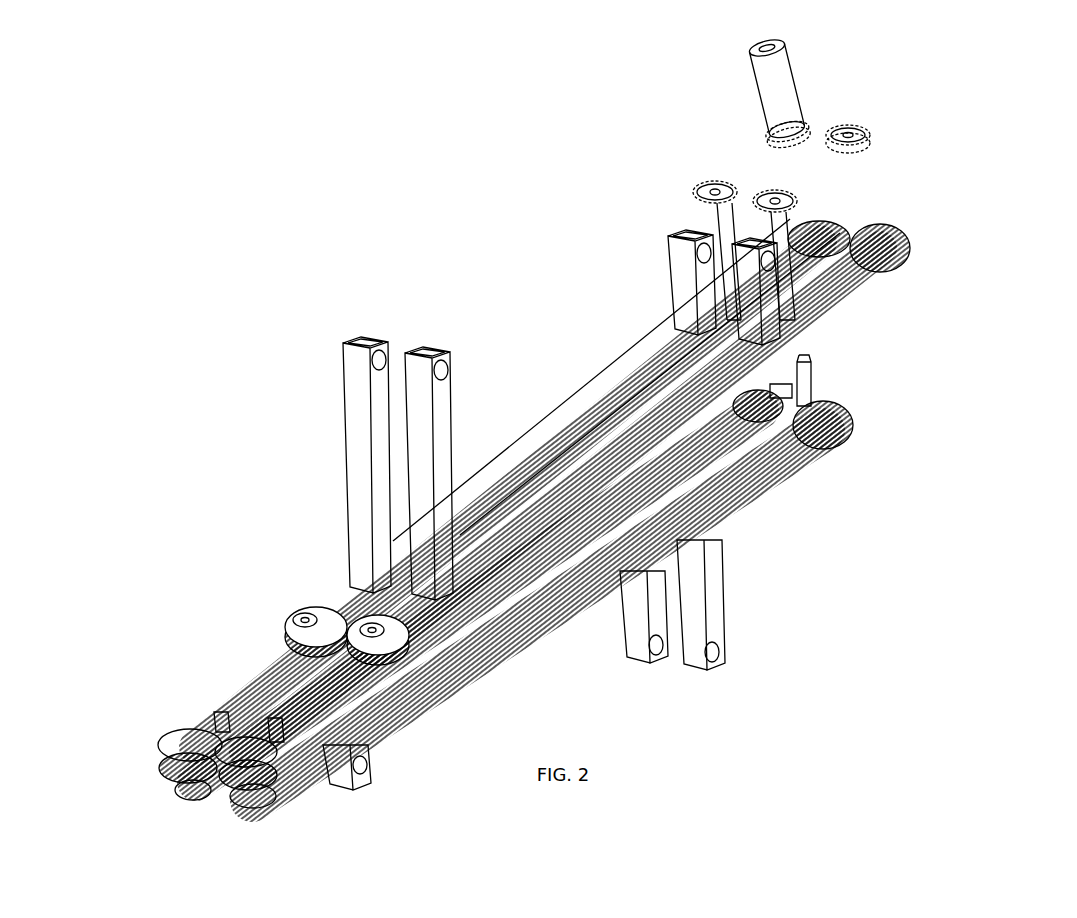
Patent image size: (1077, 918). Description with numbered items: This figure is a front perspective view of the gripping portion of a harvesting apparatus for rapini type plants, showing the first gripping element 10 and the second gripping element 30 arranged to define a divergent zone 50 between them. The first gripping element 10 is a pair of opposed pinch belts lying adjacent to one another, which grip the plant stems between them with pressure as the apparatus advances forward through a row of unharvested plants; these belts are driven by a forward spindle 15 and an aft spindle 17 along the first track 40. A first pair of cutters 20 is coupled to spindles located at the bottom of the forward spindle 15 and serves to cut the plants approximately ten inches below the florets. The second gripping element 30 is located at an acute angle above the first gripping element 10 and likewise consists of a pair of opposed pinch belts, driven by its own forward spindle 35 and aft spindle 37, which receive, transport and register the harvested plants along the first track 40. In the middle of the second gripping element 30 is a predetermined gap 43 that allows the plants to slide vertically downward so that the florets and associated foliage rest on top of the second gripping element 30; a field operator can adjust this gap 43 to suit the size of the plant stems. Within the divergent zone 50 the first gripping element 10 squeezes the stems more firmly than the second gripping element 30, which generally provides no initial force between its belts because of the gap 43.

The first gripping element 10 is at (182, 727).
The forward spindle 15 is at (248, 812).
The aft spindle 17 is at (797, 377).
The first pair of cutters 20 is at (302, 795).
The second gripping element 30 is at (542, 413).
The forward spindle 35 is at (300, 606).
The aft spindle 37 is at (712, 180).
The first track 40 is at (628, 375).
The predetermined gap 43 is at (858, 221).
The divergent zone 50 is at (828, 392).